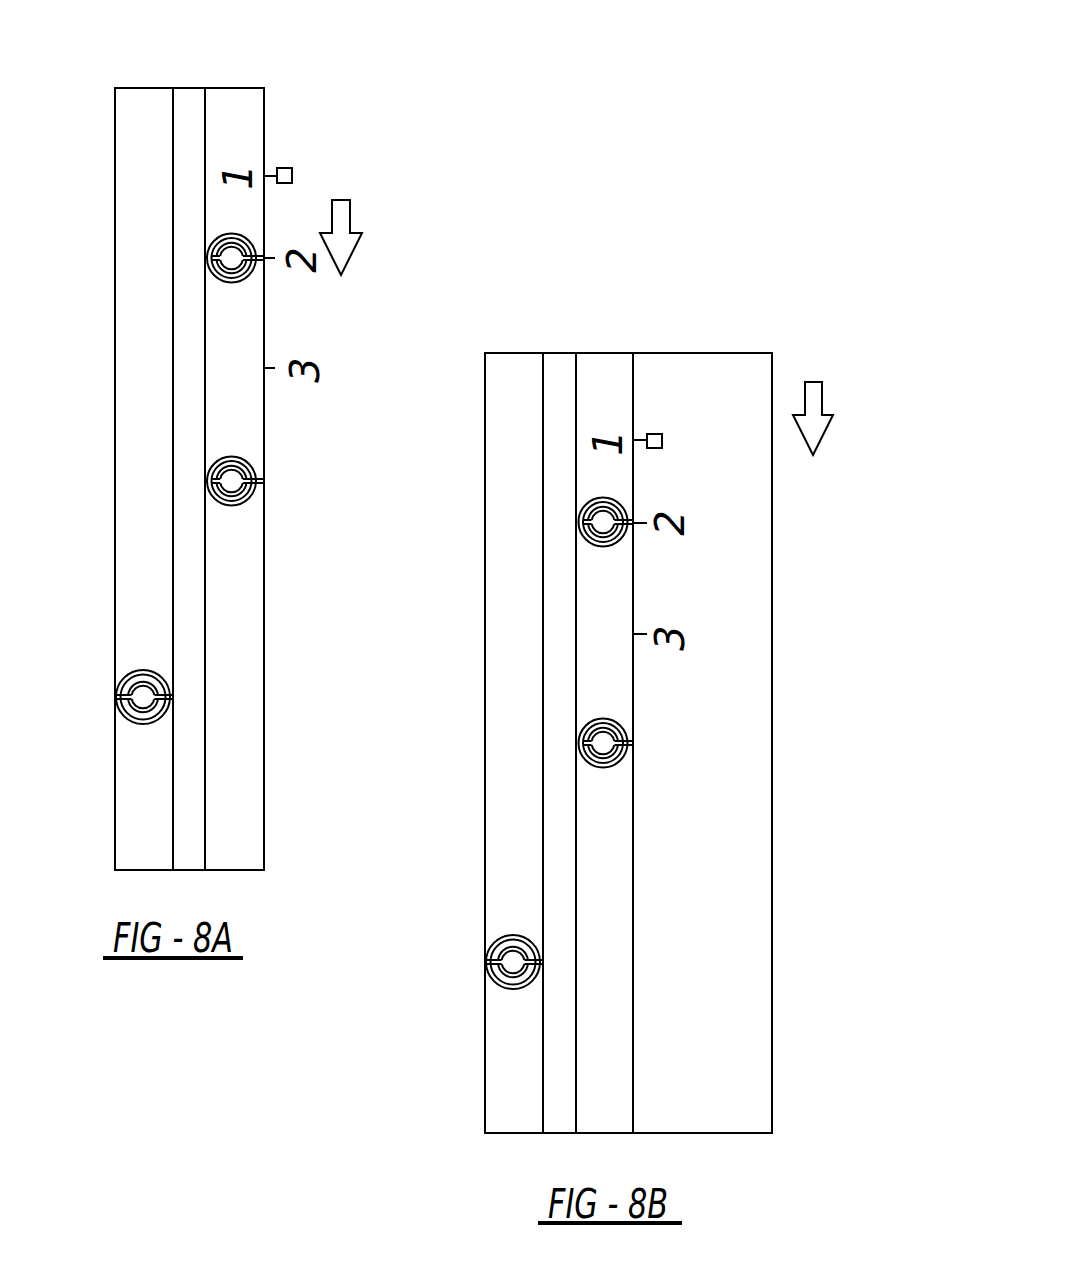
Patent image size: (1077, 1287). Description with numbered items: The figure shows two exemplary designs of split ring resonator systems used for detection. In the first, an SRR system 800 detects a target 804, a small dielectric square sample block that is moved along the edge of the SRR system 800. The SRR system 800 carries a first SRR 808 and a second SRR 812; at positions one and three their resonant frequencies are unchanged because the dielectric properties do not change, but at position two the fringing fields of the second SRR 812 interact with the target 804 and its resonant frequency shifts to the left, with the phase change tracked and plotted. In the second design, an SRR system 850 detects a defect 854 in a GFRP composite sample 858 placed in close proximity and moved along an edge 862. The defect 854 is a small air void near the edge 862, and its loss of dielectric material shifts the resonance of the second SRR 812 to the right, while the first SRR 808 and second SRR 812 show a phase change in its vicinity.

In FIG. 8A, the SRR system 800 is at (138, 73).
In FIG. 8A, the target 804 is at (292, 168).
In FIG. 8A, the second SRR 812 is at (222, 285).
In FIG. 8B, the second SRR 812 is at (602, 548).
In FIG. 8A, the first SRR 808 is at (230, 508).
In FIG. 8B, the first SRR 808 is at (595, 770).
In FIG. 8B, the SRR system 850 is at (683, 272).
In FIG. 8B, the edge 862 is at (635, 380).
In FIG. 8B, the defect 854 is at (662, 440).
In FIG. 8B, the GFRP composite sample 858 is at (697, 722).